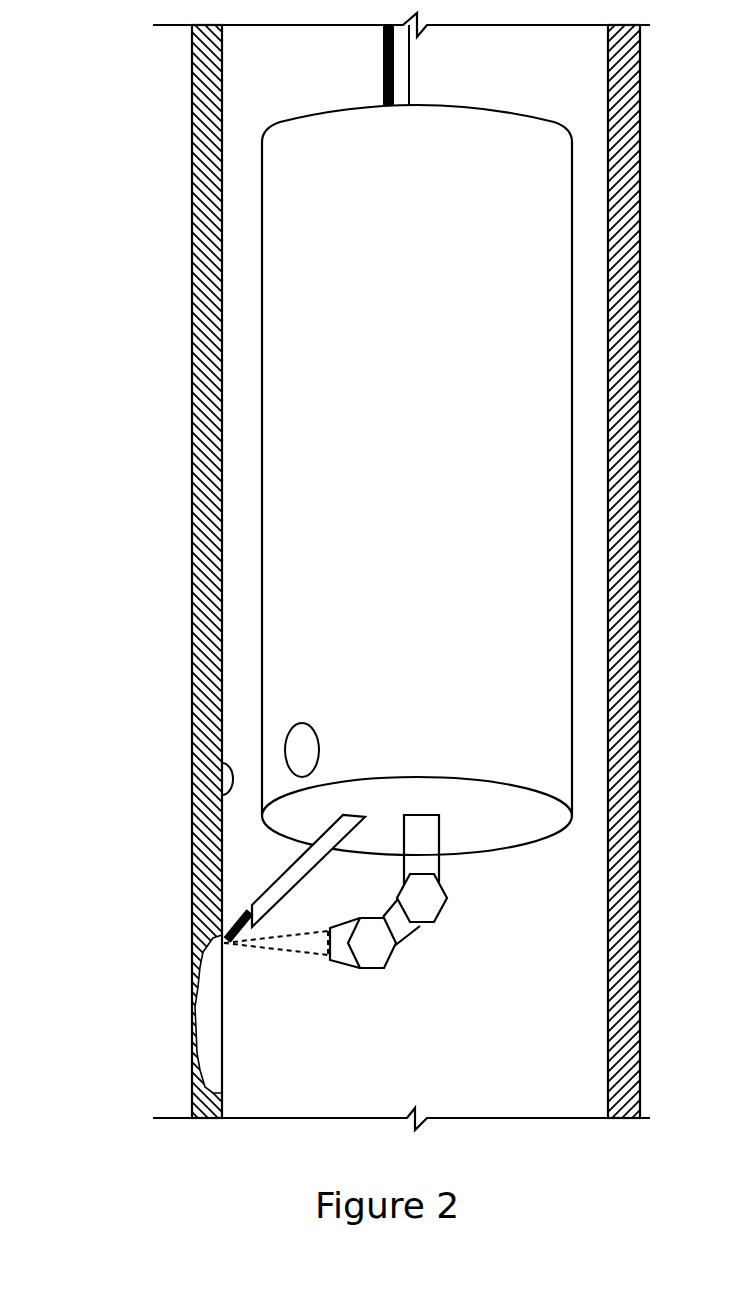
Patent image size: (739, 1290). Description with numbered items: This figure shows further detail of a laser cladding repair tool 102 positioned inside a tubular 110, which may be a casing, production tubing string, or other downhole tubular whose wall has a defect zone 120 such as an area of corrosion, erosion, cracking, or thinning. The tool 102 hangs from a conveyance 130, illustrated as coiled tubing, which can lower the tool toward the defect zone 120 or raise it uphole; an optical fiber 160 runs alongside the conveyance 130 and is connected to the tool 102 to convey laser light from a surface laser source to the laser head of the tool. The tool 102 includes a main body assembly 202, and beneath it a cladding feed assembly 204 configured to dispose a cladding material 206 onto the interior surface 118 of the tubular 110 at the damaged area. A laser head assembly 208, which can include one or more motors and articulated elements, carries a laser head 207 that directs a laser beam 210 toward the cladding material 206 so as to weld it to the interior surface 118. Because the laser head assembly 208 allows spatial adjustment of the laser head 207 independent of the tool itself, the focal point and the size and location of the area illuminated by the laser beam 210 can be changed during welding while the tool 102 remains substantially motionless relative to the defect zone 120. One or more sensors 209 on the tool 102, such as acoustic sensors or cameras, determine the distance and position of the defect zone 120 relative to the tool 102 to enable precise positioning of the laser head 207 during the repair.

The tubular 110 is at (192, 530).
The defect zone 120 is at (210, 988).
The interior surface 118 is at (207, 758).
The optical fiber 160 is at (383, 50).
The conveyance 130 is at (409, 72).
The repair tool 102 is at (262, 437).
The main body assembly 202 is at (305, 345).
The sensors 209 is at (285, 743).
The cladding feed assembly 204 is at (270, 883).
The cladding material 206 is at (237, 920).
The laser beam 210 is at (282, 957).
The laser head assembly 208 is at (408, 942).
The laser head 207 is at (343, 967).